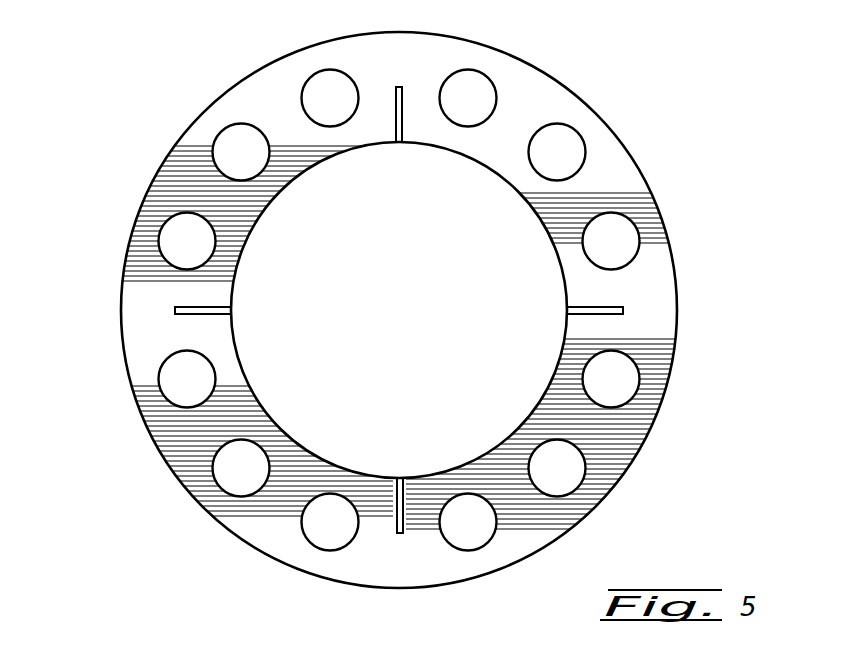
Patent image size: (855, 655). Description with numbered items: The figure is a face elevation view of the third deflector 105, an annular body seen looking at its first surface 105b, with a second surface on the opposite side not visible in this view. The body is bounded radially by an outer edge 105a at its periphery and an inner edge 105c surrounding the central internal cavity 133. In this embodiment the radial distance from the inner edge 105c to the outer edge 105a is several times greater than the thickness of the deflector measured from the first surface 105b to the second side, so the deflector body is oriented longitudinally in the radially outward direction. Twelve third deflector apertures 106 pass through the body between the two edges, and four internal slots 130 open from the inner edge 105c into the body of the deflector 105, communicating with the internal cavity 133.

The third deflector 105 is at (386, 302).
The outer edge 105a is at (541, 68).
The first surface 105b is at (429, 66).
The inner edge 105c is at (534, 205).
The third deflector apertures 106 is at (236, 150).
The internal slots 130 is at (400, 142).
The internal cavity 133 is at (433, 320).